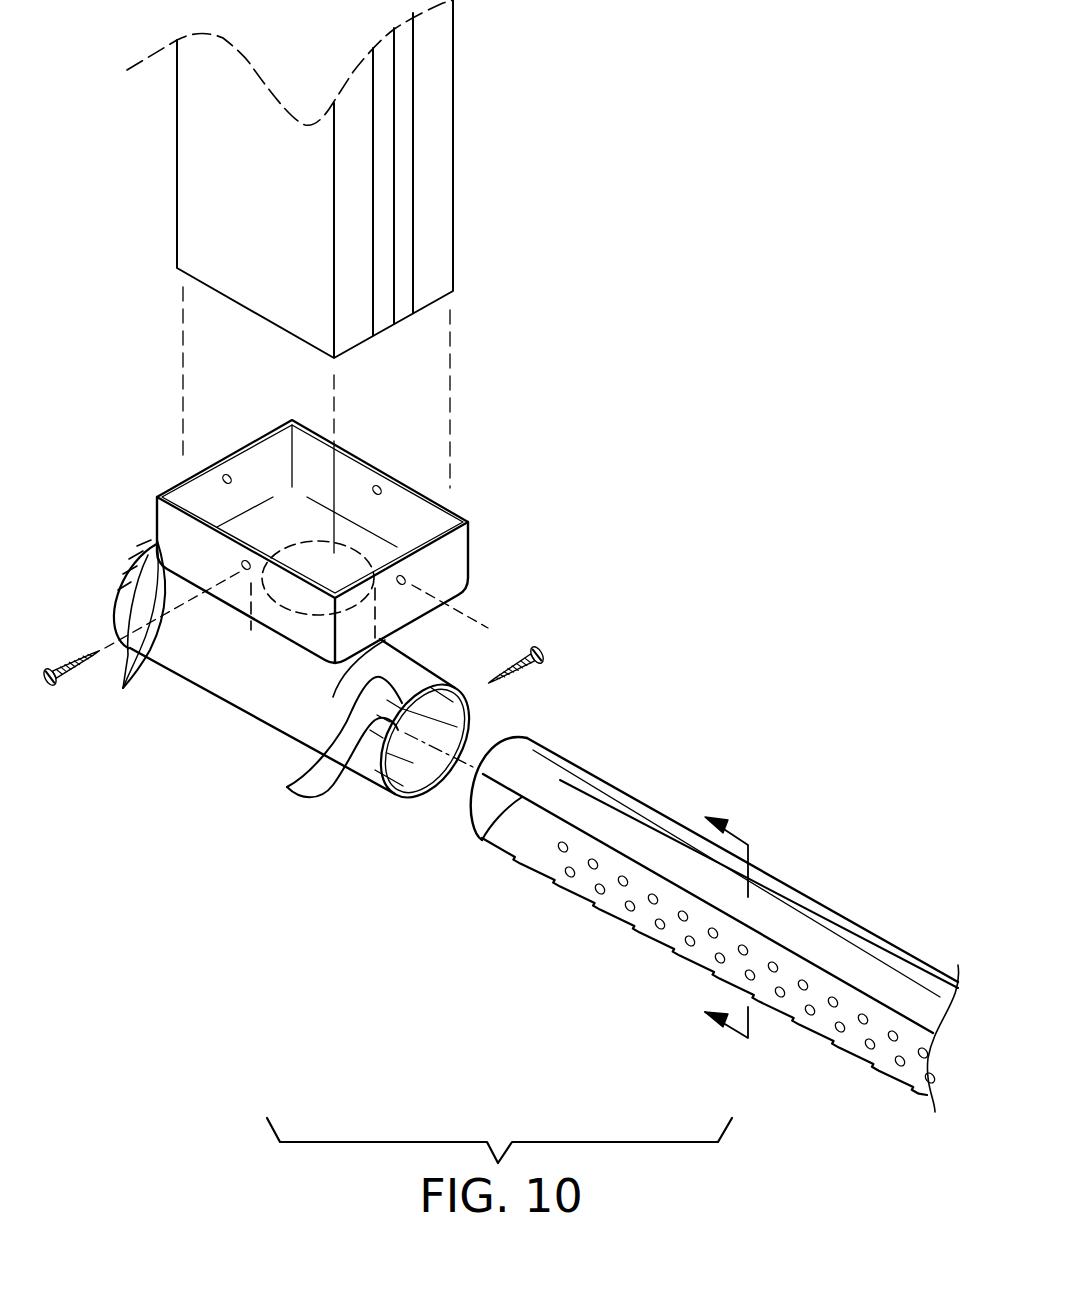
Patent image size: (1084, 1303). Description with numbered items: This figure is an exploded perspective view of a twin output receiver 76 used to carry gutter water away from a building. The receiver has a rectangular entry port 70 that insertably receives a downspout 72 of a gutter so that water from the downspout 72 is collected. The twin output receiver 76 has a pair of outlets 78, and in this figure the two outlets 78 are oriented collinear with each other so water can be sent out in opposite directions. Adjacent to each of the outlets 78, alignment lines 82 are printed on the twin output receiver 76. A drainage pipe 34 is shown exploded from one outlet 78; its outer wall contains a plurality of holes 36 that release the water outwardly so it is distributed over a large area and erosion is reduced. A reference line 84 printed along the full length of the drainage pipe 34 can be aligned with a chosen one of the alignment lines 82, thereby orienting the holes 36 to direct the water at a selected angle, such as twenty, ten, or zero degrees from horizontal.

The drainage pipe 34 is at (660, 810).
The holes 36 is at (623, 878).
The rectangular entry port 70 is at (254, 476).
The downspout 72 is at (404, 322).
The twin output receiver 76 is at (227, 703).
The outlets 78 is at (415, 765).
The alignment lines 82 is at (249, 673).
The reference line 84 is at (477, 840).